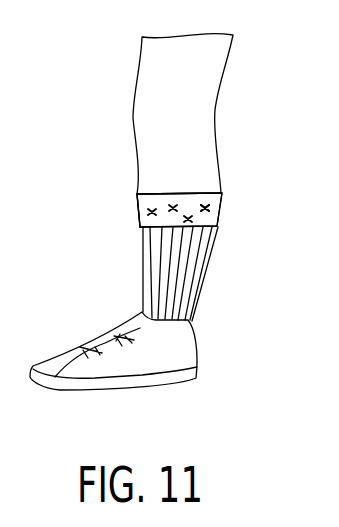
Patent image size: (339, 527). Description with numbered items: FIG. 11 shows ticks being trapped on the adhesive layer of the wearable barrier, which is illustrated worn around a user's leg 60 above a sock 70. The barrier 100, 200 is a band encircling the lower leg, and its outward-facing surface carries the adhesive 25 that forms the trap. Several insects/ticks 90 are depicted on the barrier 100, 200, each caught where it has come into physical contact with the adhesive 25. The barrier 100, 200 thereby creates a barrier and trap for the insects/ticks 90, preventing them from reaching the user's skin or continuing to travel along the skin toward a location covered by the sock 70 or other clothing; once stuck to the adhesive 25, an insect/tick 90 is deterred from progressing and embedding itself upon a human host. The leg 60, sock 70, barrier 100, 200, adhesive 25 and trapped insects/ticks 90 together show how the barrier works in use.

The leg of user 60 is at (205, 84).
The insect/tick 90 is at (210, 196).
The adhesive layer 25 is at (140, 222).
The barrier 100 is at (213, 210).
The barrier 200 is at (179, 210).
The sock 70 is at (187, 279).